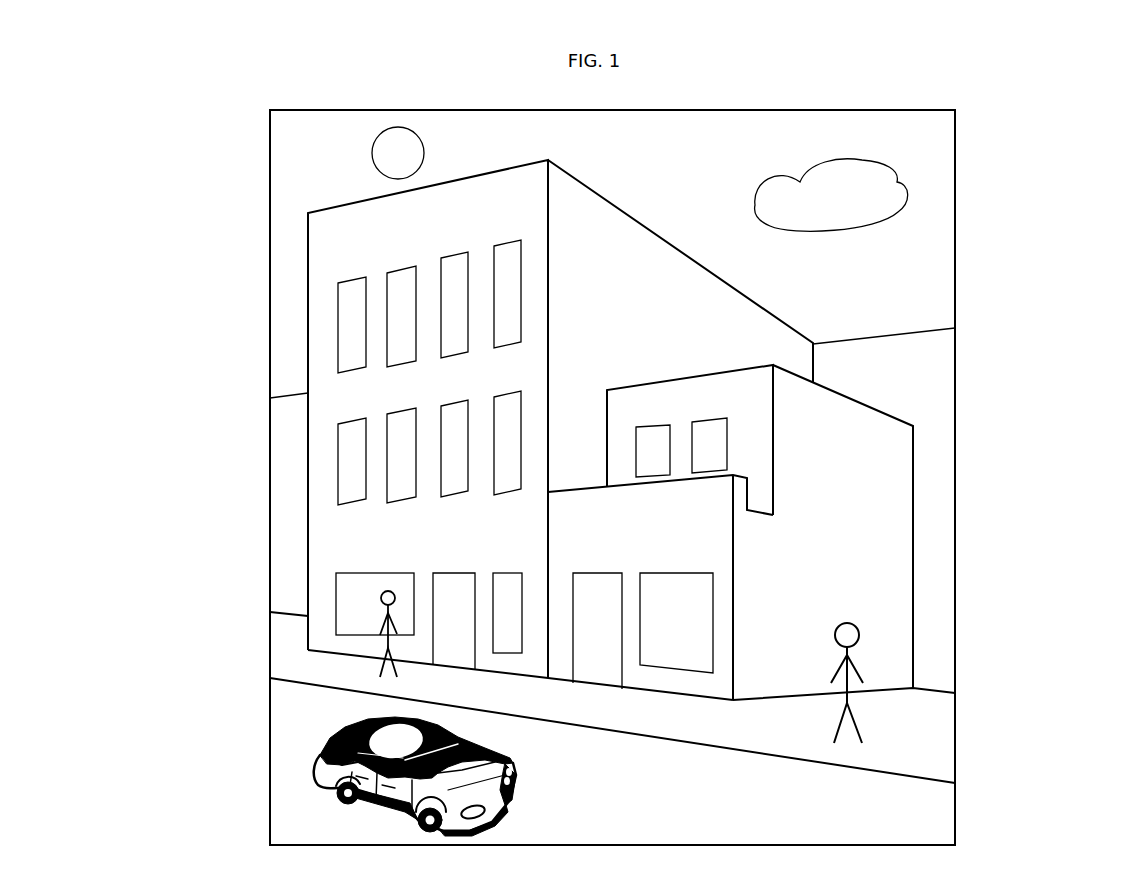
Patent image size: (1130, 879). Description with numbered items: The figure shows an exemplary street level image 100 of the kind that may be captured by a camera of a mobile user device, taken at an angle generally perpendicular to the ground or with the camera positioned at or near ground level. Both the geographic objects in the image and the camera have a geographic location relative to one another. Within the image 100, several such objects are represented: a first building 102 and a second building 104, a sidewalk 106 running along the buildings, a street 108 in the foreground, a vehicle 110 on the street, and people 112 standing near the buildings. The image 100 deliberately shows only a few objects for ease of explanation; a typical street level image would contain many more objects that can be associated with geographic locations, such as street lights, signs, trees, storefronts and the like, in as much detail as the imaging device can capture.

The street level image 100 is at (653, 100).
The building 102 is at (316, 363).
The building 104 is at (872, 542).
The sidewalk 106 is at (292, 640).
The street 108 is at (877, 794).
The vehicle 110 is at (318, 753).
The people 112 is at (356, 602).